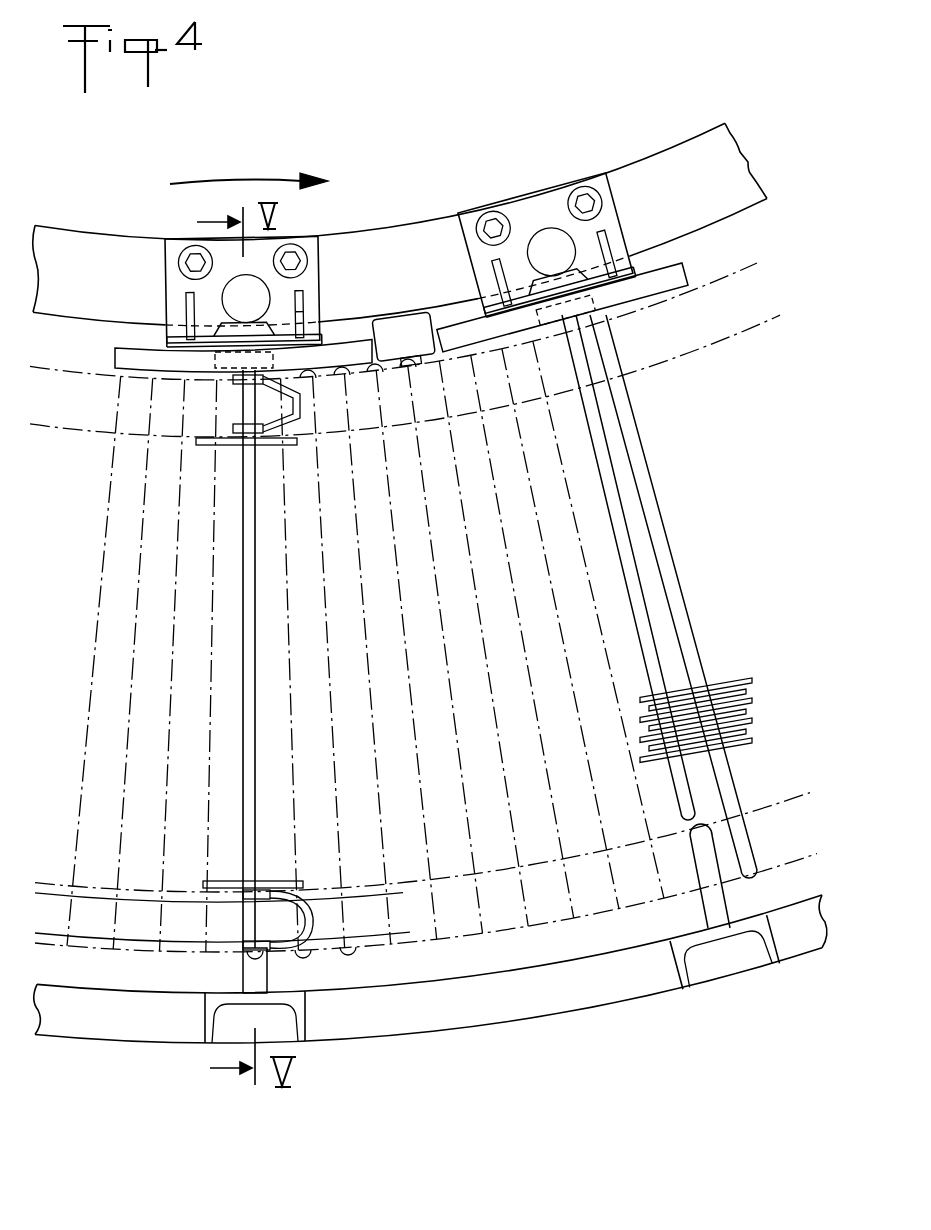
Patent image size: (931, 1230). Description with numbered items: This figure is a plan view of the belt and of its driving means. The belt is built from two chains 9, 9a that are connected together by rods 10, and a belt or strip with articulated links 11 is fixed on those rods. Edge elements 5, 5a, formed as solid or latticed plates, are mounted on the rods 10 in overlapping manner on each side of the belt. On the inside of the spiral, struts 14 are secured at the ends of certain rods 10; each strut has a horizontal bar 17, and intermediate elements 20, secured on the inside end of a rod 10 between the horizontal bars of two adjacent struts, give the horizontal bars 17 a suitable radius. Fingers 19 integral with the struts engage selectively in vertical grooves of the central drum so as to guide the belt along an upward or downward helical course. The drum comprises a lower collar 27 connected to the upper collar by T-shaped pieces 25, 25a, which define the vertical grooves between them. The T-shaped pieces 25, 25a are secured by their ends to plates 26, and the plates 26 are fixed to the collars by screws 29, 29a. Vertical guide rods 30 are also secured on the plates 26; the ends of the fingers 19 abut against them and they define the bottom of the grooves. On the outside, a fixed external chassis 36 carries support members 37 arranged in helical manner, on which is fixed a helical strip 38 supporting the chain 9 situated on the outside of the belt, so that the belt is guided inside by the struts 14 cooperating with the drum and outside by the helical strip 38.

The edge element 5 is at (278, 880).
The edge element 5a is at (283, 445).
The chain 9 is at (305, 900).
The chain 9a is at (303, 412).
The rod 10 is at (247, 598).
The belt with articulated links 11 is at (722, 687).
The strut 14 is at (347, 337).
The horizontal bar 17 is at (673, 280).
The finger 19 is at (230, 333).
The intermediate element 20 is at (405, 325).
The T-shaped piece 25 is at (185, 305).
The T-shaped piece 25a is at (300, 313).
The plate 26 is at (356, 234).
The lower collar 27 is at (670, 165).
The screw 29 is at (491, 226).
The screw 29a is at (598, 190).
The vertical guide rod 30 is at (258, 300).
The fixed external chassis 36 is at (680, 975).
The support member 37 is at (700, 905).
The helical strip 38 is at (372, 925).